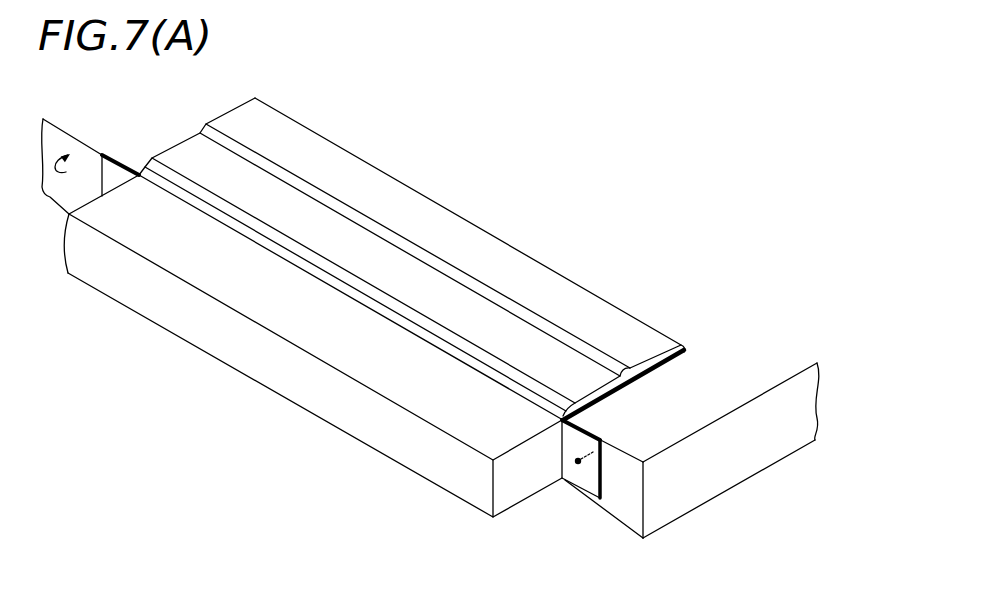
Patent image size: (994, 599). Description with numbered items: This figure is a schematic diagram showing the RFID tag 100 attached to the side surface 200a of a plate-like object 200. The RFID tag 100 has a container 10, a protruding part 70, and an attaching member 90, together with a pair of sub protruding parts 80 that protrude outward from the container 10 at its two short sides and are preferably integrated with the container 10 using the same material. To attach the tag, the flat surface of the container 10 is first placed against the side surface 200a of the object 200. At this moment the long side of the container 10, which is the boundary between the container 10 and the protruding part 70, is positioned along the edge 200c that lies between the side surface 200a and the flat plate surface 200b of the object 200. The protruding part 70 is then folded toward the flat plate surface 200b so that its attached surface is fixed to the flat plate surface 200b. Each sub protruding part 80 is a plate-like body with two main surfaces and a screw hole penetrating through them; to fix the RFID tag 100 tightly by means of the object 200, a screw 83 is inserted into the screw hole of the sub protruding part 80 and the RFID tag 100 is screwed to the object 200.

The container 10 is at (517, 490).
The protruding part 70 is at (652, 358).
The sub protruding part 80 is at (110, 177).
The screw 83 is at (580, 466).
The attaching member 90 is at (679, 345).
The RFID tag 100 is at (568, 163).
The plate-like object 200 is at (787, 437).
The side surface 200a is at (50, 153).
The flat plate surface 200b is at (684, 416).
The edge 200c is at (620, 466).